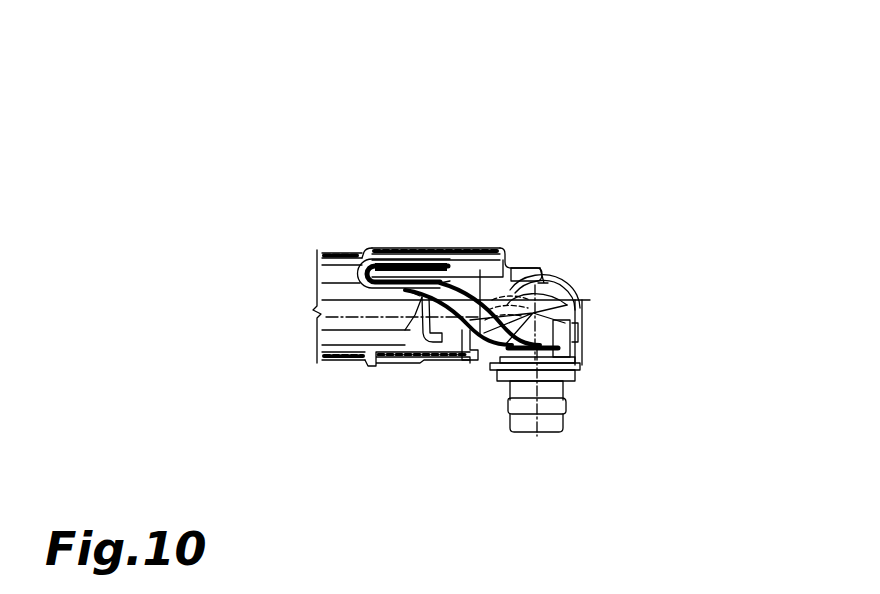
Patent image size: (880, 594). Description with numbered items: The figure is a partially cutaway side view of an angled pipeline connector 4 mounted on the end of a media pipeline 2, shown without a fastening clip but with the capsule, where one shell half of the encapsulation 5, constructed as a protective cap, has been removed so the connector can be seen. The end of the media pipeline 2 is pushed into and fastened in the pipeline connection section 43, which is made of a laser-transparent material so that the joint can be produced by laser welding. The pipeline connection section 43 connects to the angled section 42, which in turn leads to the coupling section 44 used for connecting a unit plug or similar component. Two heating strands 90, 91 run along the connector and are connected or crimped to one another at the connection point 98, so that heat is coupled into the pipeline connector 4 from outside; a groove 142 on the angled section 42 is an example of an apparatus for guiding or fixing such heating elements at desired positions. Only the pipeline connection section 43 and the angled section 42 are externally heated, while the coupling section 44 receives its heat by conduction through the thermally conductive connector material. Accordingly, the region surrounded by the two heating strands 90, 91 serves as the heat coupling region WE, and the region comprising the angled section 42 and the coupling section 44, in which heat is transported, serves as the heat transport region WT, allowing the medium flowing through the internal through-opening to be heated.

The media pipeline 2 is at (353, 330).
The pipeline connector 4 is at (426, 236).
The encapsulation 5 is at (487, 247).
The connection point 98 is at (393, 260).
The heating strand 90 is at (425, 294).
The heating strand 91 is at (436, 336).
The pipeline connection section 43 is at (462, 332).
The groove 142 is at (573, 292).
The angled section 42 is at (575, 318).
The coupling section 44 is at (580, 405).
The heat coupling region WE is at (425, 88).
The heat transport region WT is at (699, 293).